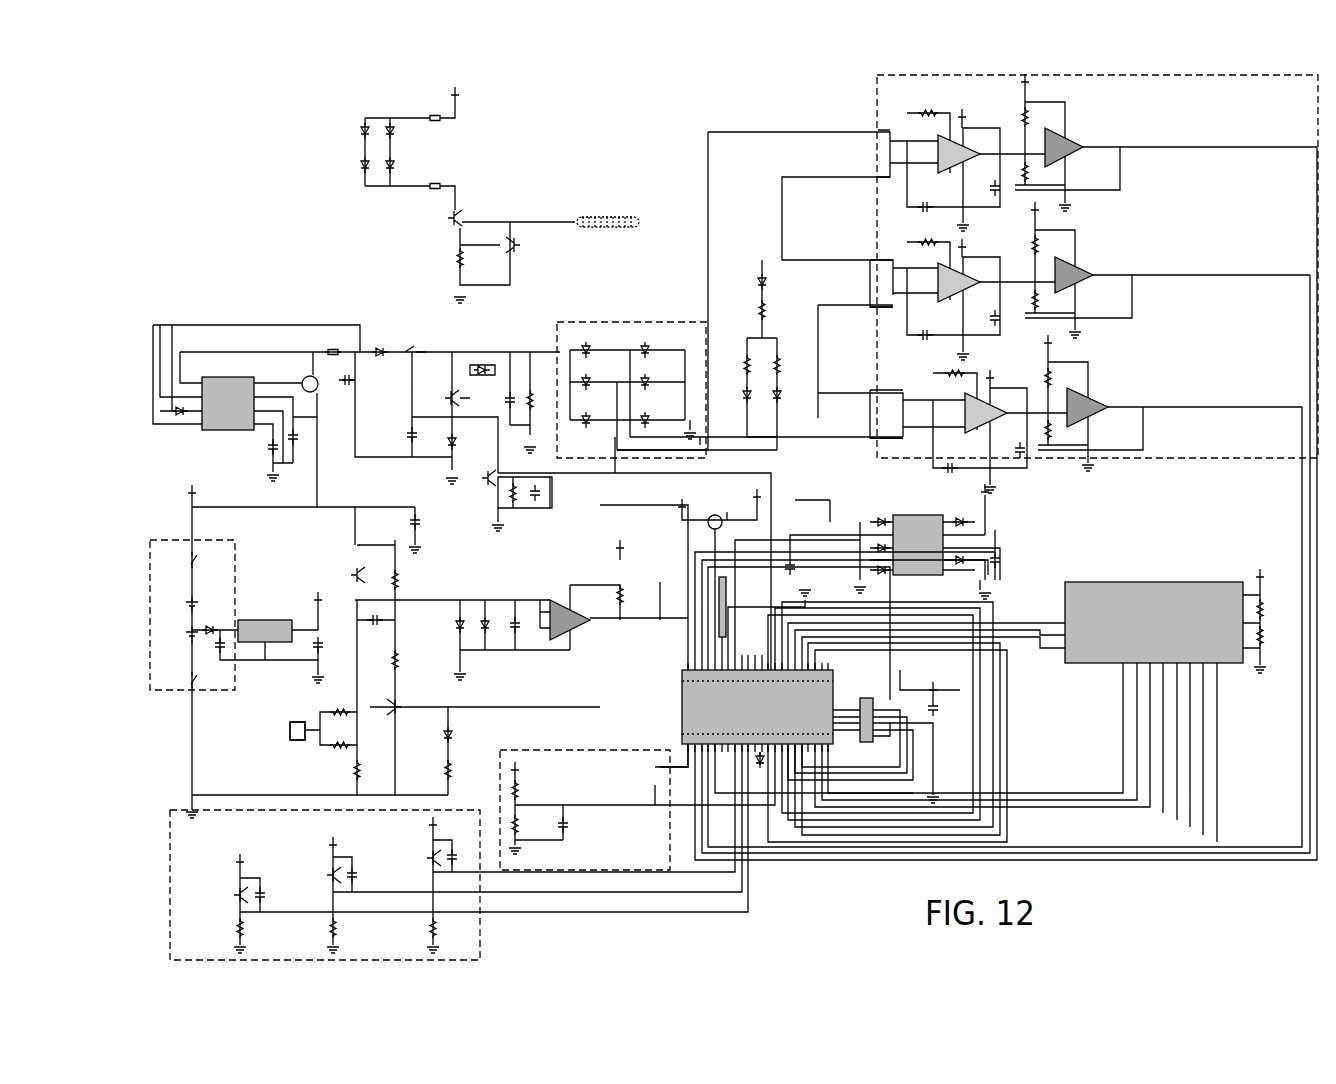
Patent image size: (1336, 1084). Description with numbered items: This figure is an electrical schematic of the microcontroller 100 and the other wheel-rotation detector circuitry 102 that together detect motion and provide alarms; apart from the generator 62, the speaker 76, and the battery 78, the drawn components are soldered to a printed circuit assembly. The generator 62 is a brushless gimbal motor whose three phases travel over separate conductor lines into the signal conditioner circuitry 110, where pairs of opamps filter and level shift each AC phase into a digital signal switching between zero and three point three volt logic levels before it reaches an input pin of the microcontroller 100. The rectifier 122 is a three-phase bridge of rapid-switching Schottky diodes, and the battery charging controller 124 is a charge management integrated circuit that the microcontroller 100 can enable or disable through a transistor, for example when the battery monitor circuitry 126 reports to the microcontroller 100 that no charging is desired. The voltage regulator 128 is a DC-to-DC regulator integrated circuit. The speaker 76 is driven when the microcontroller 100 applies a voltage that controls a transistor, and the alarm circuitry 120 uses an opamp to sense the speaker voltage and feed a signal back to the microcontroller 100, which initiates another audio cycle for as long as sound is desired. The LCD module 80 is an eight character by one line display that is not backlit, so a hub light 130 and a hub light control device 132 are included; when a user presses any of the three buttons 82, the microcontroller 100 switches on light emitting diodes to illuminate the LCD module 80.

The wheel-rotation detector circuitry 102 is at (235, 127).
The hub light 130 is at (354, 146).
The hub light control device 132 is at (528, 150).
The battery charging controller 124 is at (312, 299).
The rectifier 122 is at (570, 320).
The generator 62 is at (797, 283).
The signal conditioner circuitry 110 is at (877, 95).
The battery 78 is at (232, 540).
The voltage regulator 128 is at (284, 597).
The alarm circuitry 120 is at (510, 583).
The speaker 76 is at (303, 738).
The battery monitor circuitry 126 is at (574, 750).
The buttons 82 is at (482, 926).
The microcontroller 100 is at (682, 700).
The LCD module 80 is at (1162, 582).